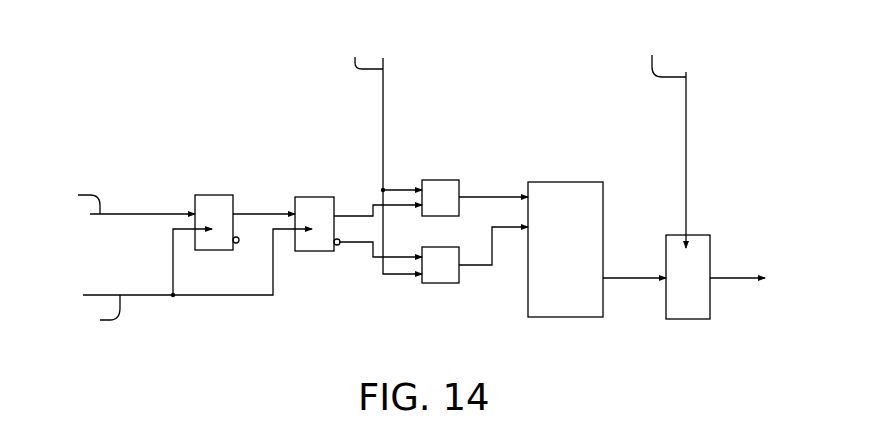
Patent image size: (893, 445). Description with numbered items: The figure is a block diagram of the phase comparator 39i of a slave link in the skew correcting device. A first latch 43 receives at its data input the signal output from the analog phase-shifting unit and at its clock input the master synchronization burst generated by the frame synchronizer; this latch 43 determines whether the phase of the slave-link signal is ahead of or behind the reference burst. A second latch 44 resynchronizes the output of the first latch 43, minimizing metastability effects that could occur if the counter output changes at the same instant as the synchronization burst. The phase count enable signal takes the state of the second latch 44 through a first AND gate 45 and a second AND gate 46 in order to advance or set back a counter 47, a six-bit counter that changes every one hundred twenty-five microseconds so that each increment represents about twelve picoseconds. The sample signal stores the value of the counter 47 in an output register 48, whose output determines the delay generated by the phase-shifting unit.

The phase comparator 39i is at (742, 125).
The first latch 43 is at (215, 195).
The second latch 44 is at (312, 197).
The first AND gate 45 is at (445, 180).
The second AND gate 46 is at (448, 283).
The counter 47 is at (565, 182).
The output register 48 is at (688, 319).